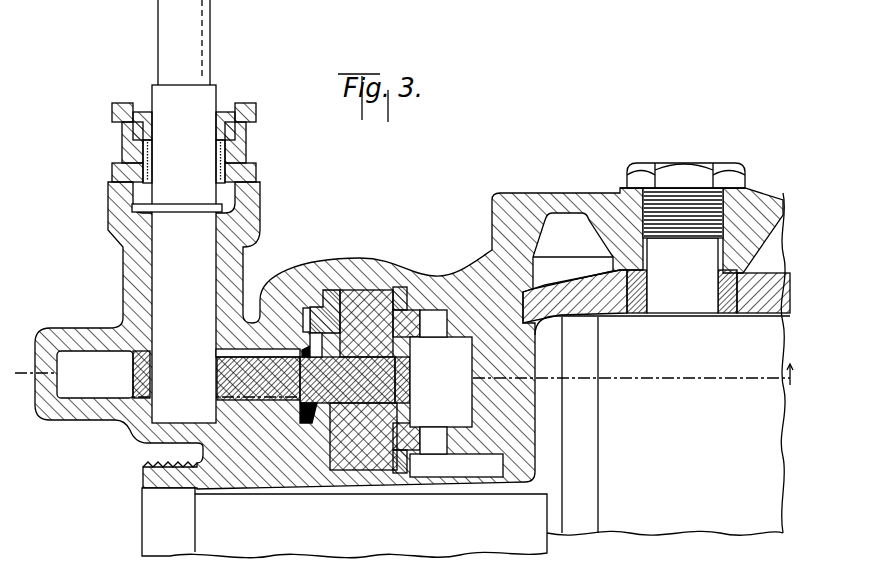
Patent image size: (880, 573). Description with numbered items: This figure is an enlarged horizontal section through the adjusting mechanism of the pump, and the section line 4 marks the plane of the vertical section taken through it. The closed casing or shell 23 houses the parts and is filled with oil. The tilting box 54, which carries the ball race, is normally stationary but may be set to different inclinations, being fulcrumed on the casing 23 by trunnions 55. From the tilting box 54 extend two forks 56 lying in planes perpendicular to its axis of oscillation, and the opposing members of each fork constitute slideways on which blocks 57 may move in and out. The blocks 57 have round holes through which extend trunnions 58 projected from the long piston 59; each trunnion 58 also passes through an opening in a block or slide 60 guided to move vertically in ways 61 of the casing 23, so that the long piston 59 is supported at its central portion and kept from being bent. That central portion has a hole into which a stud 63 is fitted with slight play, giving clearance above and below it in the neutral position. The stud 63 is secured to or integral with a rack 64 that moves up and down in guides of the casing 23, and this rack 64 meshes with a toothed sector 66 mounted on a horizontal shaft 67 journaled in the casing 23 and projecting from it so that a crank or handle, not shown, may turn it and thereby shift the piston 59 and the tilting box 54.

The section line 4- 4 is at (409, 375).
The closed casing or shell 23 is at (428, 274).
The tilting box 54 is at (578, 283).
The trunnions 55 is at (682, 238).
The forks 56 is at (457, 337).
The blocks 57 is at (424, 333).
The trunnions 58 is at (367, 297).
The long piston 59 is at (406, 368).
The blocks or slides 60 is at (336, 288).
The ways 61 is at (323, 293).
The stud 63 is at (411, 391).
The rack 64 is at (304, 405).
The toothed sector 66 is at (243, 392).
The horizontal shaft 67 is at (177, 211).